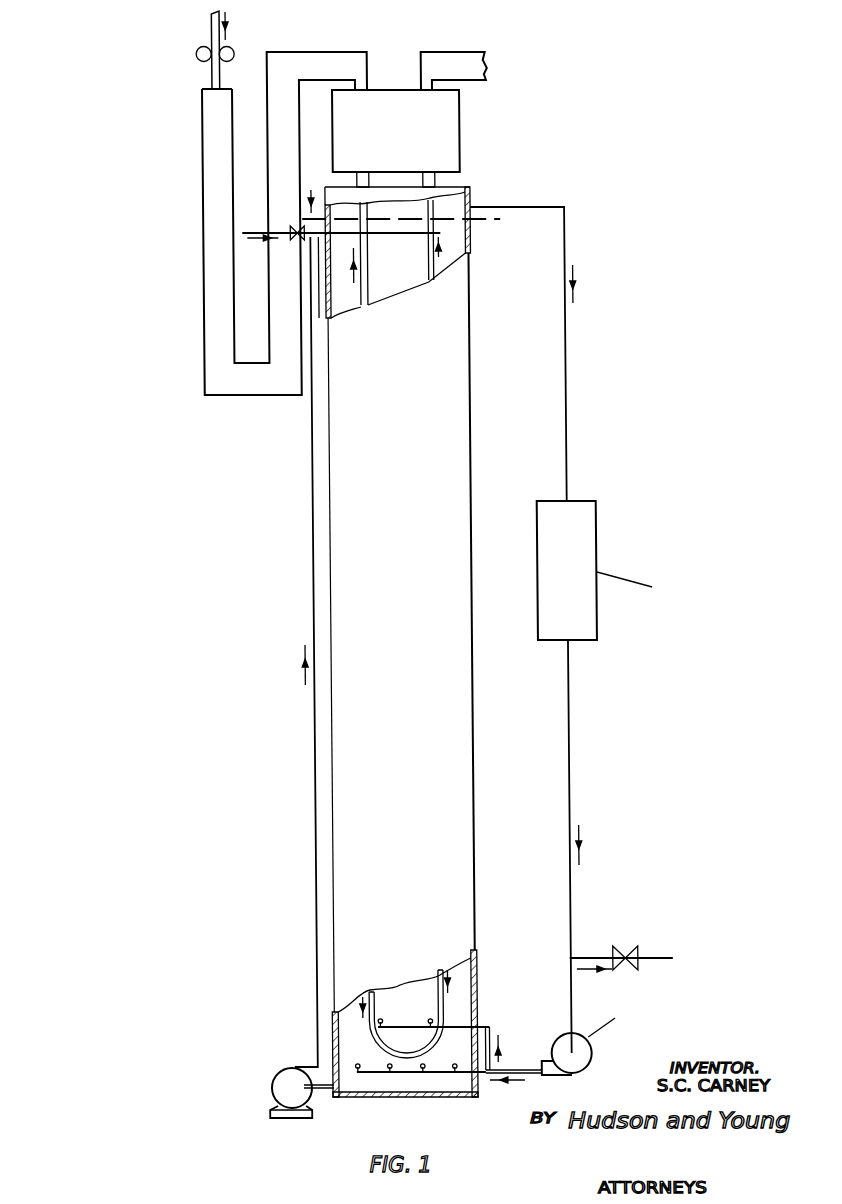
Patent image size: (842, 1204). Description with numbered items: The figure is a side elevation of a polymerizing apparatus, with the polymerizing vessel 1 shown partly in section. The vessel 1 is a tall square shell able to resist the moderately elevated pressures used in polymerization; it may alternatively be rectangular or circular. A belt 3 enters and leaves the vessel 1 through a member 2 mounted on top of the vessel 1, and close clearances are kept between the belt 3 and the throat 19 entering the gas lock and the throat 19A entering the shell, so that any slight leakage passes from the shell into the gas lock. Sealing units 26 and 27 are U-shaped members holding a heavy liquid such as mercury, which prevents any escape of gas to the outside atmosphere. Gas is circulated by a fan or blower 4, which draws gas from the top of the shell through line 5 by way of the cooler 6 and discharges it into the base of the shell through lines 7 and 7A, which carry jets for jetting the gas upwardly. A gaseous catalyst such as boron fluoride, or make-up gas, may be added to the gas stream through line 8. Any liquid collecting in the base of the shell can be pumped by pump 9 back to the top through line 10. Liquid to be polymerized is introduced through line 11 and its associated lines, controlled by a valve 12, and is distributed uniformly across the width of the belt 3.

The polymerizing vessel 1 is at (472, 438).
The member 2 is at (387, 82).
The belt 3 is at (213, 72).
The fan or blower 4 is at (546, 1045).
The line 5 is at (538, 205).
The cooler 6 is at (594, 523).
The line 7 is at (425, 1073).
The line 7A is at (441, 1025).
The line 8 is at (653, 955).
The pump 9 is at (264, 1080).
The line 10 is at (308, 557).
The line 11 is at (255, 232).
The valve 12 is at (296, 238).
The throat 19 is at (435, 85).
The throat 19A is at (433, 180).
The liquid seal 26 is at (467, 50).
The sealing unit 27 is at (316, 48).